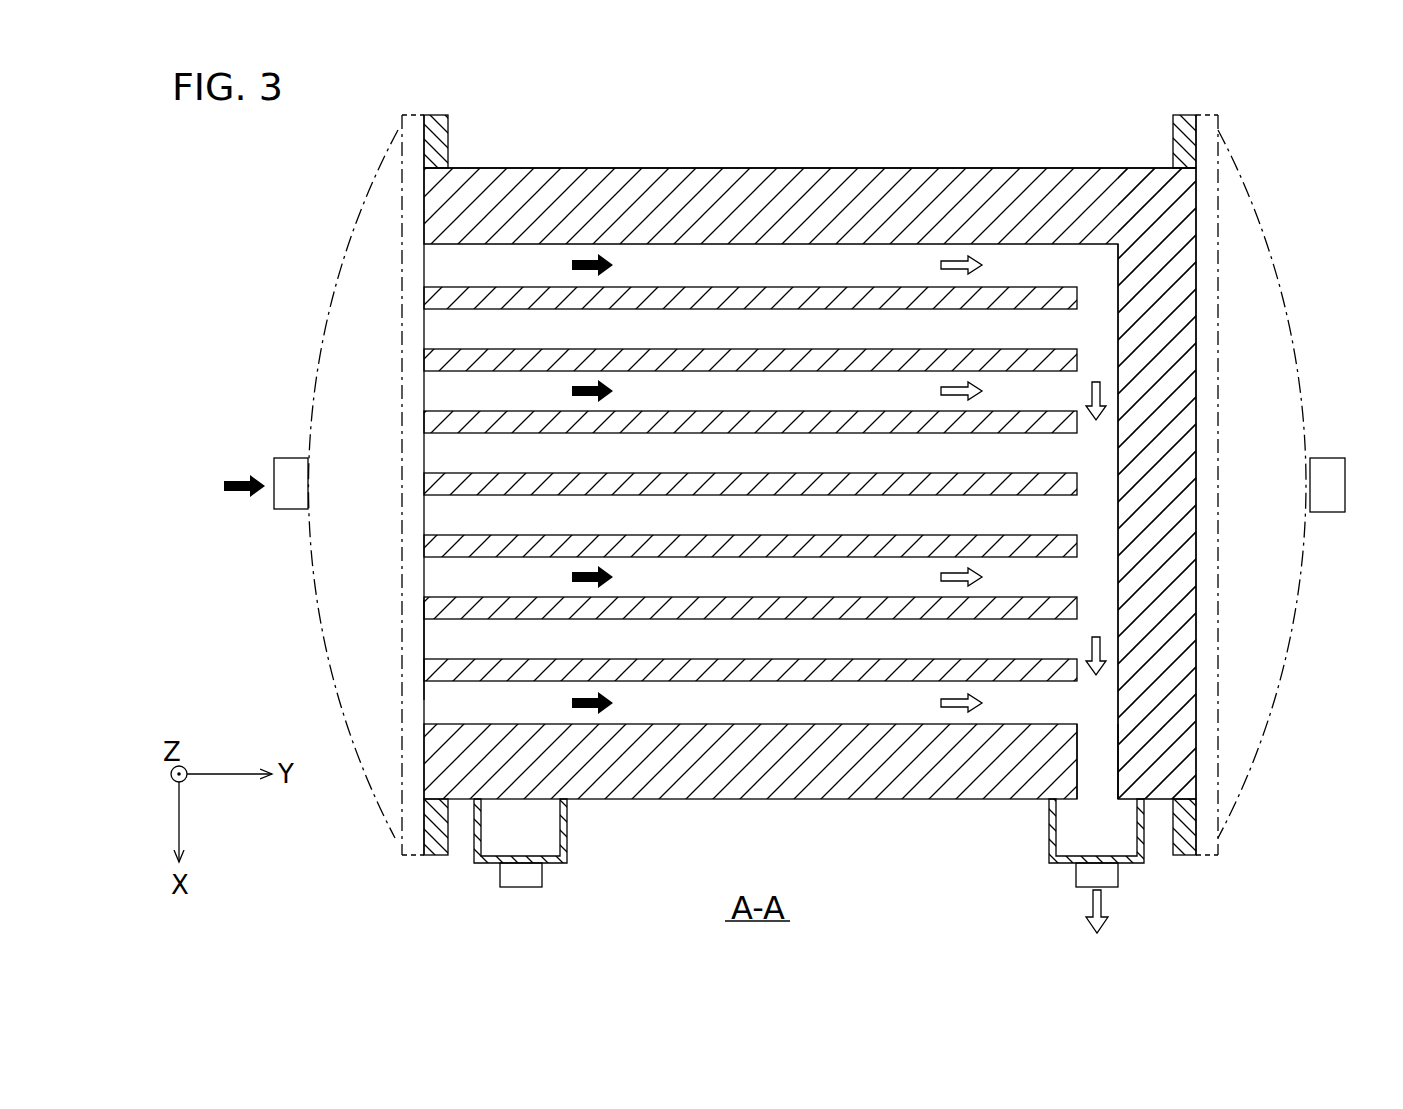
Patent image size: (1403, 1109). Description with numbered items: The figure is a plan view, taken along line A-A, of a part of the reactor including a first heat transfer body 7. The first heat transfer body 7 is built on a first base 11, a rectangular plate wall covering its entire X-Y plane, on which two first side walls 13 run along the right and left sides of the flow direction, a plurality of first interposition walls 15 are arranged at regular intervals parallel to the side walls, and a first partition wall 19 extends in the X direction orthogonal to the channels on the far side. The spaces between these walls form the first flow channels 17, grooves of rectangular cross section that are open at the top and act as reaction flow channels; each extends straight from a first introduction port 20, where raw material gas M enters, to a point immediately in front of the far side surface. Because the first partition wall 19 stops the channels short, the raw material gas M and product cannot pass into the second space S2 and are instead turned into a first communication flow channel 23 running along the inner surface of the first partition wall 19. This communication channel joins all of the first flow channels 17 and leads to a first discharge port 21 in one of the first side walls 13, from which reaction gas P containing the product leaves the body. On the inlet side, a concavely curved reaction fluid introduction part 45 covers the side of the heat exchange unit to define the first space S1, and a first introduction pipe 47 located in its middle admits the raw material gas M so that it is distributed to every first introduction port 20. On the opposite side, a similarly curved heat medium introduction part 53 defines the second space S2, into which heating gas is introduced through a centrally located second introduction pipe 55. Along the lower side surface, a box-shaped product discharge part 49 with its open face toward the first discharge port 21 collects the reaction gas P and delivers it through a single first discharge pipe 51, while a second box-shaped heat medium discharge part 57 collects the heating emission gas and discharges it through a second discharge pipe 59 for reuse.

The first heat transfer body 7 is at (902, 165).
The first base 11 is at (424, 582).
The first side wall 13 is at (660, 176).
The first interposition wall 15 is at (787, 294).
The first flow channel 17 is at (723, 392).
The first partition wall 19 is at (1190, 466).
The first introduction port 20 is at (424, 645).
The first discharge port 21 is at (1083, 767).
The first communication flow channel 23 is at (1097, 525).
The reaction fluid introduction part 45 is at (348, 220).
The first introduction pipe 47 is at (288, 458).
The product discharge part 49 is at (1049, 830).
The first discharge pipe 51 is at (1076, 880).
The heat medium introduction part 53 is at (1280, 224).
The second introduction pipe 55 is at (1338, 458).
The heat medium discharge part 57 is at (567, 832).
The second discharge pipe 59 is at (542, 880).
The raw material gas M is at (236, 472).
The reaction gas P is at (1103, 905).
The first space S1 is at (353, 537).
The second space S2 is at (1272, 616).